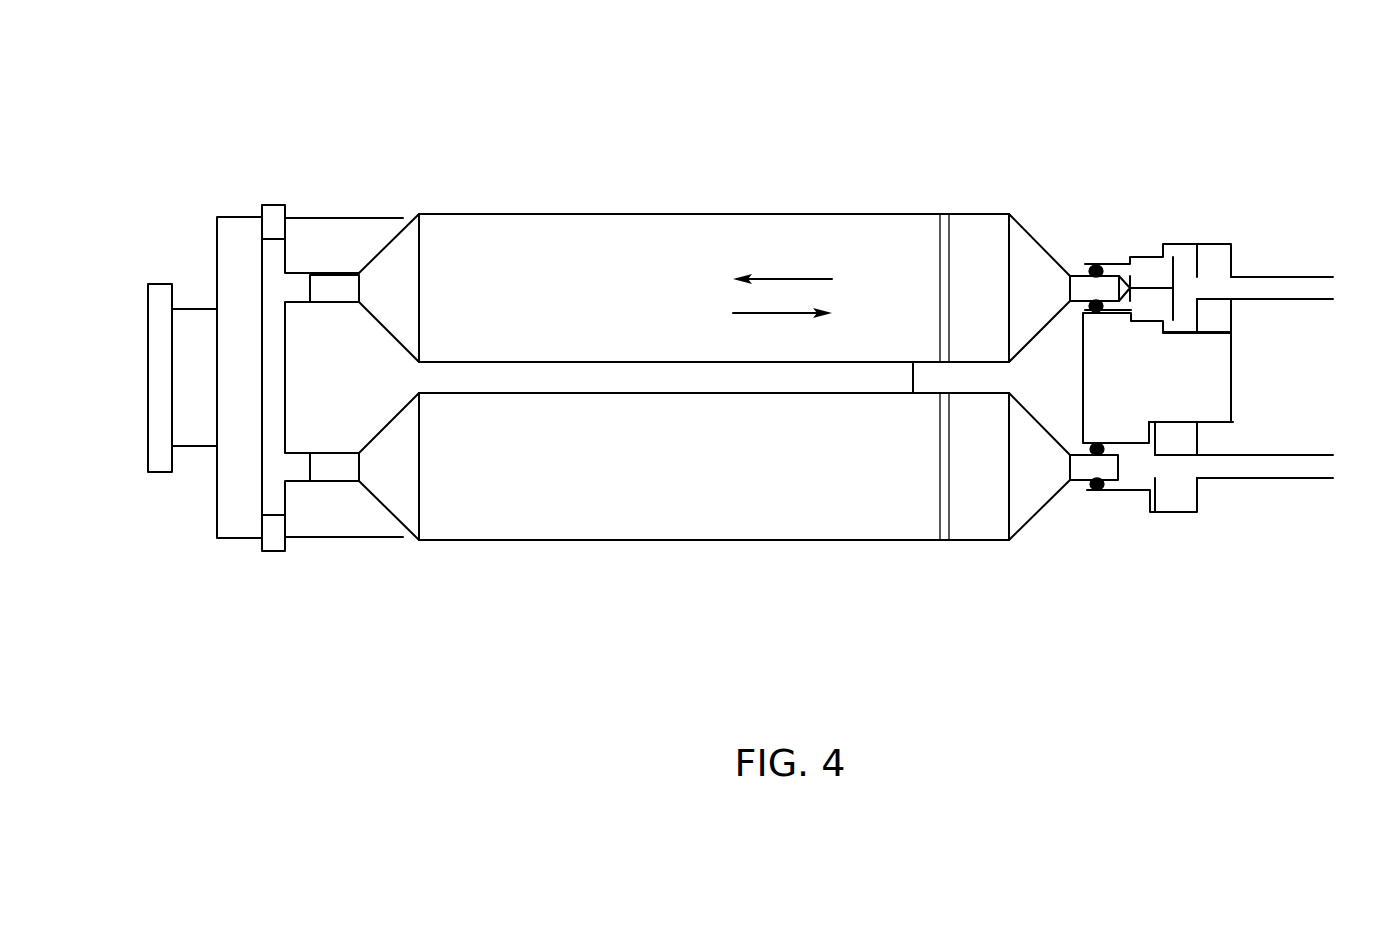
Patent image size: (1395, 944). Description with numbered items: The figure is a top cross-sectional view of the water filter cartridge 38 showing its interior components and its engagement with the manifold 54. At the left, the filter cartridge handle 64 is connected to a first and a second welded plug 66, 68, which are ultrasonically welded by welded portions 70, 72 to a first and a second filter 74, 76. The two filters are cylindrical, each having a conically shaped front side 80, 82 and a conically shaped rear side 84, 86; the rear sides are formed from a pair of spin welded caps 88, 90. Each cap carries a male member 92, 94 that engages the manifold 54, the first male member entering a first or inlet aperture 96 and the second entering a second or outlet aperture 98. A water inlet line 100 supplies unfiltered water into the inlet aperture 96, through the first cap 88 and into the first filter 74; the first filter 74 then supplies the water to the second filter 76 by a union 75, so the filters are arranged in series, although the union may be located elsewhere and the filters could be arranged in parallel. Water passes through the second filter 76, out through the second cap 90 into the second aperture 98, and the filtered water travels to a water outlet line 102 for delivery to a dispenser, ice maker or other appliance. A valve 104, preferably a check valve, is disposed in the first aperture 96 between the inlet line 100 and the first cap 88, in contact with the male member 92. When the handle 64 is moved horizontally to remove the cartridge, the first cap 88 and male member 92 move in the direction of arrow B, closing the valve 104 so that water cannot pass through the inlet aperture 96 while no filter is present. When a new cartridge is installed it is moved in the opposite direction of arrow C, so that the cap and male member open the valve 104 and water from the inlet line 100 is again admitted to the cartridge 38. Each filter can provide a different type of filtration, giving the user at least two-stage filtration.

The water filter cartridge 38 is at (762, 86).
The manifold 54 is at (1152, 153).
The filter cartridge handle 64 is at (147, 402).
The first welded plug 66 is at (275, 214).
The second welded plug 68 is at (278, 538).
The welded portion 70 is at (322, 274).
The welded portion 72 is at (320, 483).
The first filter 74 is at (562, 238).
The union 75 is at (270, 485).
The second filter 76 is at (536, 520).
The conically shaped front side 80 is at (395, 252).
The conically shaped front side 82 is at (398, 495).
The conically shaped rear side 84 is at (1037, 258).
The conically shaped rear side 86 is at (1032, 497).
The first cap 88 is at (977, 232).
The second cap 90 is at (972, 522).
The male member 92 is at (1103, 285).
The male member 94 is at (1078, 475).
The first or inlet aperture 96 is at (1143, 272).
The second or outlet aperture 98 is at (1127, 480).
The water inlet line 100 is at (1273, 277).
The water outlet line 102 is at (1282, 455).
The valve 104 is at (1183, 272).
The arrow B is at (782, 278).
The arrow C is at (777, 313).